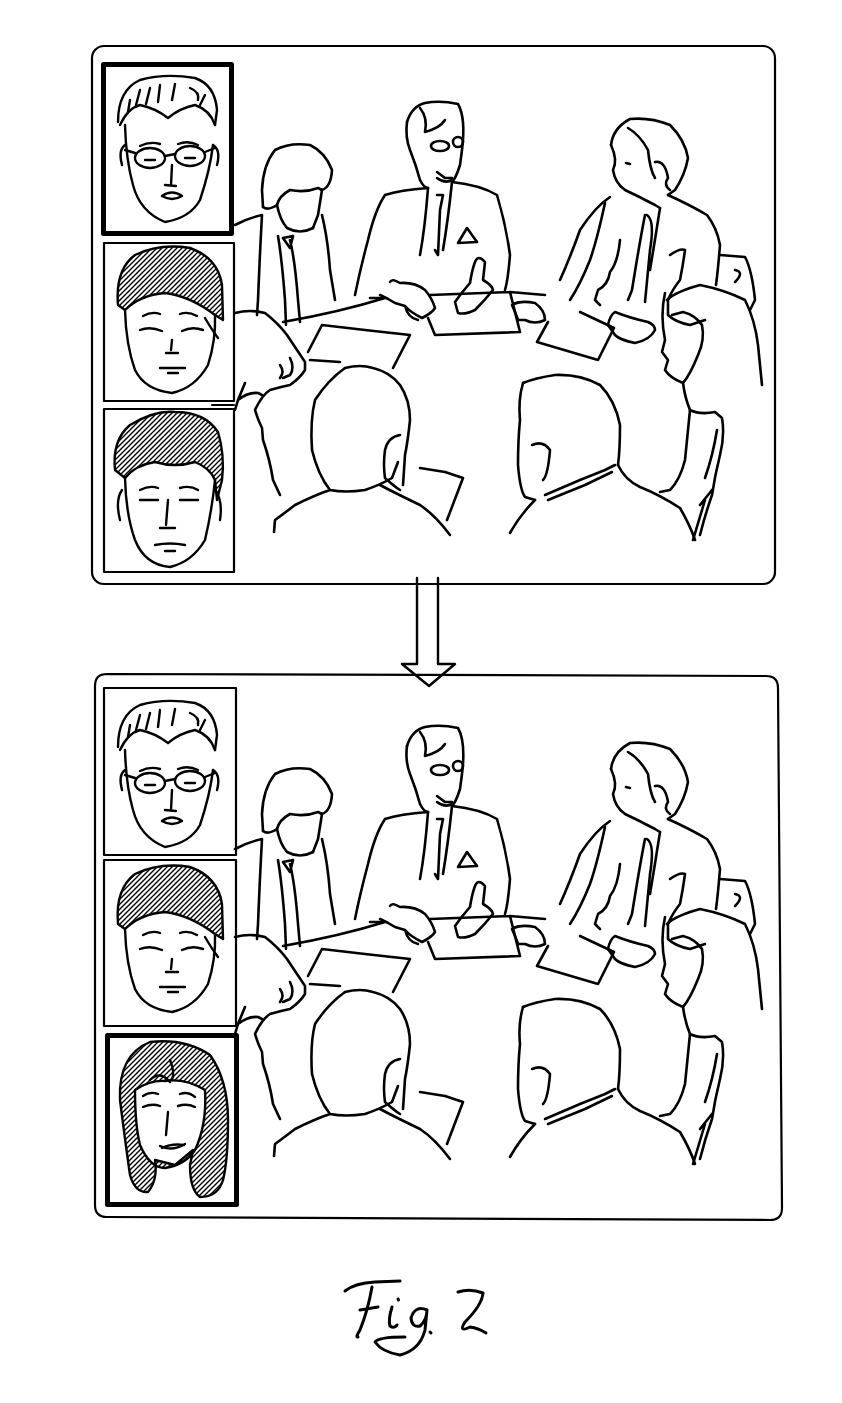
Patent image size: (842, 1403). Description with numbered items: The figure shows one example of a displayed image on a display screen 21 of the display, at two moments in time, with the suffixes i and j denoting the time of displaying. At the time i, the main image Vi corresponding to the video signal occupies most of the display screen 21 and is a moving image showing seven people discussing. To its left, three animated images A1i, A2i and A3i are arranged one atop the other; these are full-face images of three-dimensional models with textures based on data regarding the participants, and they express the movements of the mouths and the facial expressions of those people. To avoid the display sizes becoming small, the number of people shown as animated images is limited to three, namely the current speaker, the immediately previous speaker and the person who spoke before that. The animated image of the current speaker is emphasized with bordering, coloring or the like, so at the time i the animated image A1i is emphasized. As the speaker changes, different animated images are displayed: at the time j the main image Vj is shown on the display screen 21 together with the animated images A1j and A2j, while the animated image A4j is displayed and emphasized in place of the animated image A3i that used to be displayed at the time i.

The display screen 21 is at (698, 46).
The main image at time i Vi is at (562, 100).
The main image at time j Vj is at (562, 729).
The animated image at time i A1i is at (100, 122).
The animated image at time i A2i is at (103, 282).
The animated image at time i A3i is at (104, 445).
The animated image at time j A1j is at (104, 737).
The animated image at time j A2j is at (104, 899).
The animated image at time j A4j is at (105, 1077).